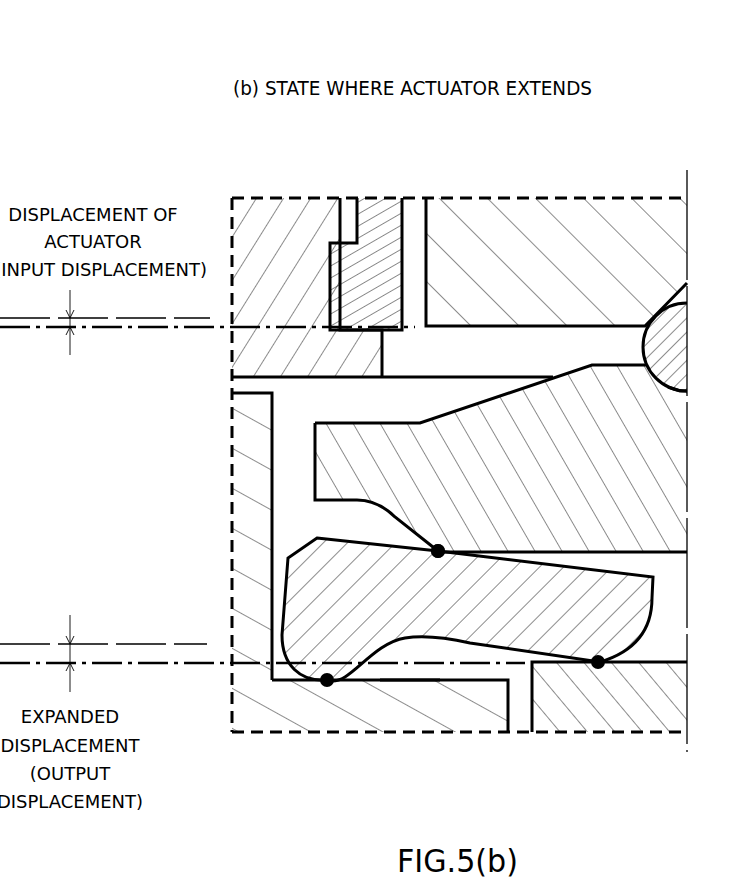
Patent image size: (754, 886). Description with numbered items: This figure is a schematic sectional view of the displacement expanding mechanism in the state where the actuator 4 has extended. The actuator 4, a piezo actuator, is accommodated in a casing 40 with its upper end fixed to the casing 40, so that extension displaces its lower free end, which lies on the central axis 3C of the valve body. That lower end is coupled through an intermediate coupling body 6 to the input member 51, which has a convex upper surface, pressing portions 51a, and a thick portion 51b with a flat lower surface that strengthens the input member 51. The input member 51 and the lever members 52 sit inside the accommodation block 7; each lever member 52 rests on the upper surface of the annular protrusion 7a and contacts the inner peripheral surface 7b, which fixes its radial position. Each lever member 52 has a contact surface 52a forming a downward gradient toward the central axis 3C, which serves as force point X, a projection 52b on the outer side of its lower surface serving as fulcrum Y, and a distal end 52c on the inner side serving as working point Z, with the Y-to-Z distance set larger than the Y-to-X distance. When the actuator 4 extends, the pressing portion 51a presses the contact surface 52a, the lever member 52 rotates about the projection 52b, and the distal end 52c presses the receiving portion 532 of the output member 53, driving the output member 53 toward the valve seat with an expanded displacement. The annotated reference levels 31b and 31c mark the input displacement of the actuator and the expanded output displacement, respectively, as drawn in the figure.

The central axis 3C is at (687, 450).
The actuator 4 is at (582, 215).
The casing 40 is at (375, 215).
The intermediate coupling body 6 is at (643, 347).
The accommodation block 7 is at (327, 593).
The annular protrusion 7a is at (428, 672).
The inner peripheral surface 7b is at (278, 472).
The reference displacement line 31b is at (262, 610).
The reference displacement line 31c is at (684, 394).
The input member 51 is at (446, 467).
The pressing portion 51a is at (432, 546).
The thick portion 51b is at (672, 553).
The lever member 52 is at (287, 550).
The contact surface 52a is at (436, 560).
The projection 52b is at (327, 688).
The distal end 52c is at (598, 668).
The output member 53 is at (621, 727).
The receiving portion 532 is at (655, 712).